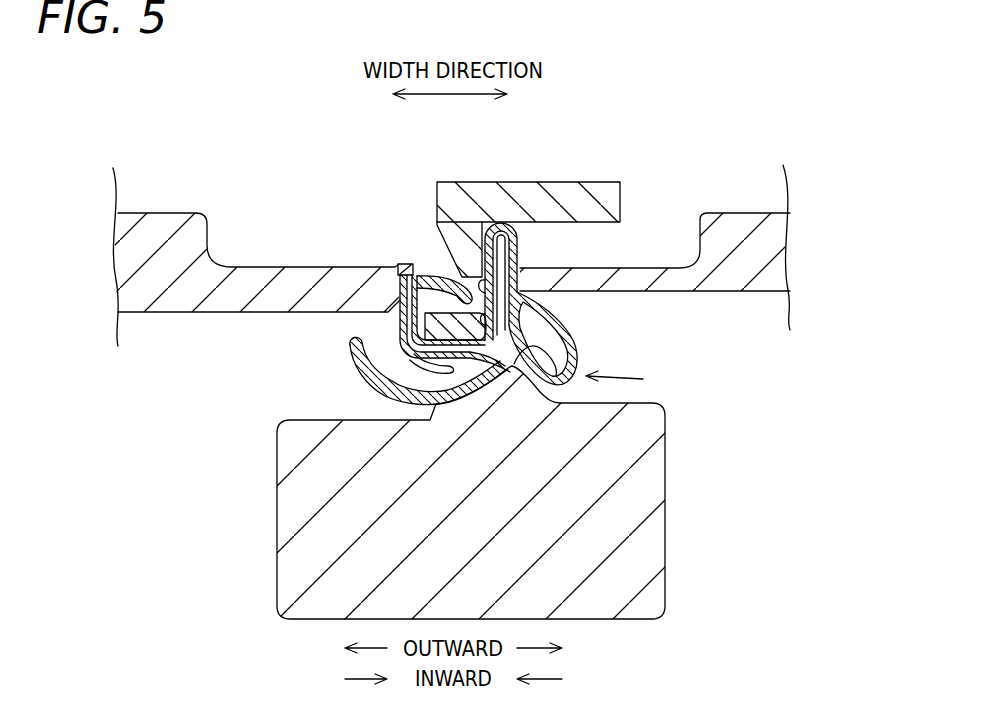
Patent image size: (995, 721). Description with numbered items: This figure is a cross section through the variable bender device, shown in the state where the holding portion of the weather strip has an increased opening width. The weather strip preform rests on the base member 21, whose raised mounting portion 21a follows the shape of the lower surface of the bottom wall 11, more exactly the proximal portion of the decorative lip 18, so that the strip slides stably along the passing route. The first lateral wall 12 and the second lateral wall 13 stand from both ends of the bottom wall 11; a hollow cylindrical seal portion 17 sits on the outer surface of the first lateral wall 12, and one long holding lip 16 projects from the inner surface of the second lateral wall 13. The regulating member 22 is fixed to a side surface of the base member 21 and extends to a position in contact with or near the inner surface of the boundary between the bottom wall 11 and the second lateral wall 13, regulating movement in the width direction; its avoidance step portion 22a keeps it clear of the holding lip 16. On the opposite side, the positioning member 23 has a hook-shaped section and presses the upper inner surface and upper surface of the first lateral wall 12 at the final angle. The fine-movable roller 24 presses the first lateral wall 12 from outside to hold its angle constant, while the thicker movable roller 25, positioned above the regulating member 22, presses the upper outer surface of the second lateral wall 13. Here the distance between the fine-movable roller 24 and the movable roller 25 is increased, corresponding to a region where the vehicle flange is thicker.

The bottom wall 11 is at (423, 358).
The first lateral wall 12 is at (512, 238).
The second lateral wall 13 is at (406, 263).
The holding lip 16 is at (440, 273).
The seal portion 17 is at (628, 382).
The decorative lip 18 is at (355, 375).
The base member 21 is at (637, 555).
The mounting portion 21a is at (553, 343).
The regulating member 22 is at (458, 302).
The avoidance step portion 22a is at (551, 305).
The positioning member 23 is at (532, 192).
The fine-movable roller 24 is at (640, 277).
The movable roller 25 is at (253, 280).